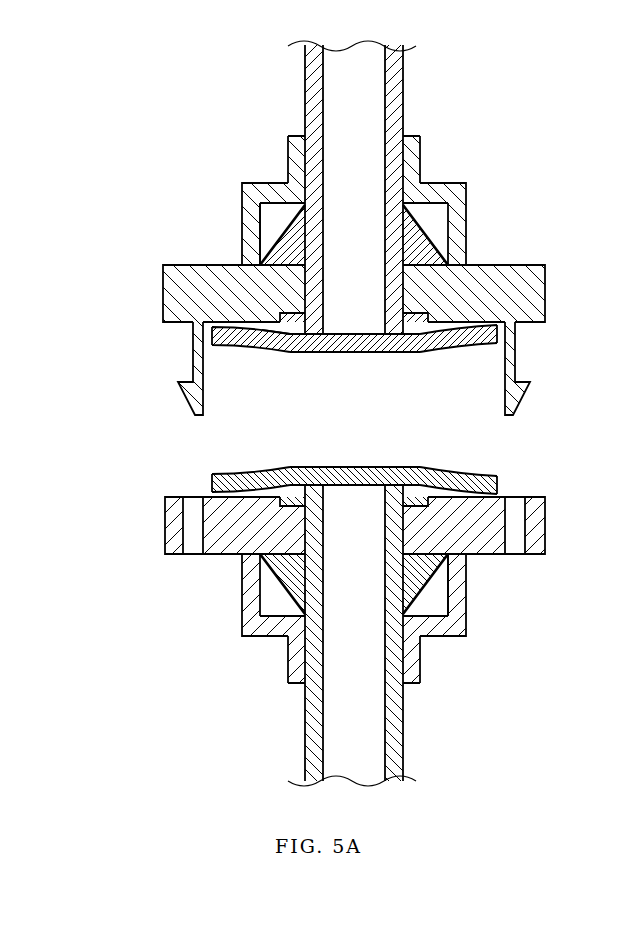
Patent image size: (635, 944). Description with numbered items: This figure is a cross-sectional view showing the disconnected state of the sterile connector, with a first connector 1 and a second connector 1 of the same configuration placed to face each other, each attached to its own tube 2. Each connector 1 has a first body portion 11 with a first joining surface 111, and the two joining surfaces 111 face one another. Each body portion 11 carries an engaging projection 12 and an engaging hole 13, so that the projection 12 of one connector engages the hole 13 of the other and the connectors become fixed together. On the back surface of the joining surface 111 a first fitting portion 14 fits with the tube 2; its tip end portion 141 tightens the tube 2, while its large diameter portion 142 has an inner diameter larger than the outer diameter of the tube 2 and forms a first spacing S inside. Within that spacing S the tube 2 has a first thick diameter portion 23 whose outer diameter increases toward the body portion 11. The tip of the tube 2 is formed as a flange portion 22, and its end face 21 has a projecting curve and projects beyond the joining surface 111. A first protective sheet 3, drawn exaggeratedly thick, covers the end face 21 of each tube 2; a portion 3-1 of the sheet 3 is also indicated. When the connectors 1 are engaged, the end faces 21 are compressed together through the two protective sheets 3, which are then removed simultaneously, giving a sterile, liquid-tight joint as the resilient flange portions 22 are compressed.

The first connector 1 is at (360, 407).
The first tube 2 is at (404, 88).
The first protective sheet 3 is at (354, 409).
The gasket bent portion 3-1 is at (262, 346).
The first body portion 11 is at (356, 432).
The first joining surface 111 is at (220, 328).
The engaging projection 12 is at (195, 402).
The engaging hole 13 is at (183, 525).
The first fitting portion 14 is at (349, 407).
The tip end portion 141 is at (422, 157).
The large diameter portion 142 is at (348, 408).
The end face 21 is at (366, 353).
The flange portion 22 is at (411, 351).
The first thick diameter portion 23 is at (425, 250).
The first spacing S is at (265, 218).